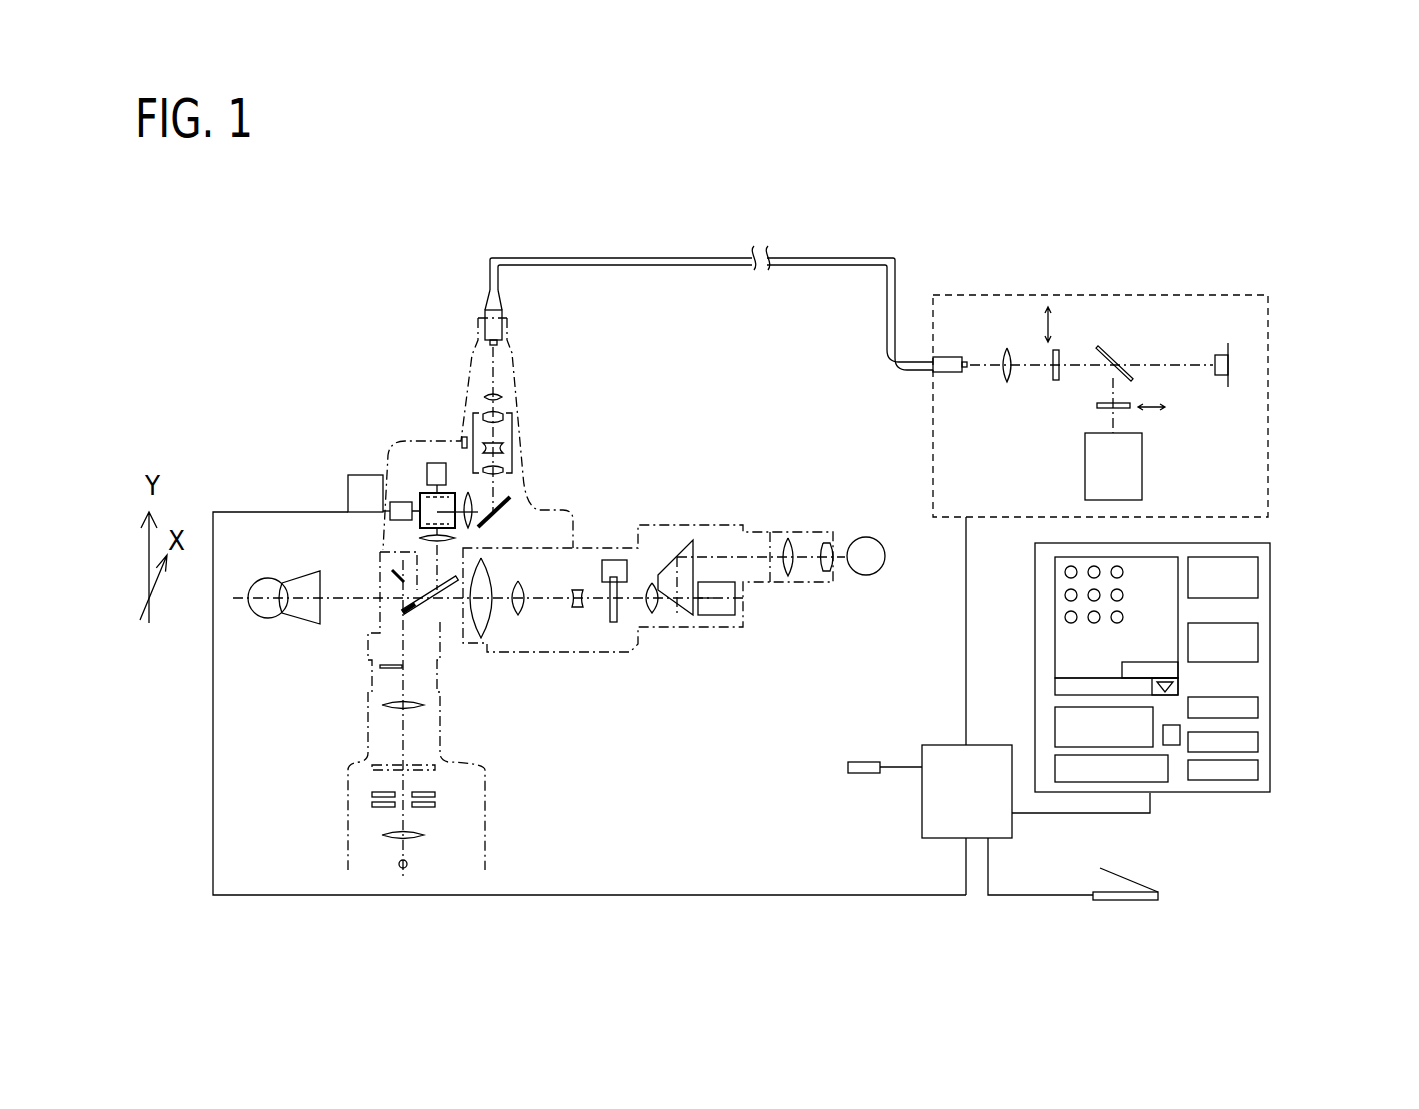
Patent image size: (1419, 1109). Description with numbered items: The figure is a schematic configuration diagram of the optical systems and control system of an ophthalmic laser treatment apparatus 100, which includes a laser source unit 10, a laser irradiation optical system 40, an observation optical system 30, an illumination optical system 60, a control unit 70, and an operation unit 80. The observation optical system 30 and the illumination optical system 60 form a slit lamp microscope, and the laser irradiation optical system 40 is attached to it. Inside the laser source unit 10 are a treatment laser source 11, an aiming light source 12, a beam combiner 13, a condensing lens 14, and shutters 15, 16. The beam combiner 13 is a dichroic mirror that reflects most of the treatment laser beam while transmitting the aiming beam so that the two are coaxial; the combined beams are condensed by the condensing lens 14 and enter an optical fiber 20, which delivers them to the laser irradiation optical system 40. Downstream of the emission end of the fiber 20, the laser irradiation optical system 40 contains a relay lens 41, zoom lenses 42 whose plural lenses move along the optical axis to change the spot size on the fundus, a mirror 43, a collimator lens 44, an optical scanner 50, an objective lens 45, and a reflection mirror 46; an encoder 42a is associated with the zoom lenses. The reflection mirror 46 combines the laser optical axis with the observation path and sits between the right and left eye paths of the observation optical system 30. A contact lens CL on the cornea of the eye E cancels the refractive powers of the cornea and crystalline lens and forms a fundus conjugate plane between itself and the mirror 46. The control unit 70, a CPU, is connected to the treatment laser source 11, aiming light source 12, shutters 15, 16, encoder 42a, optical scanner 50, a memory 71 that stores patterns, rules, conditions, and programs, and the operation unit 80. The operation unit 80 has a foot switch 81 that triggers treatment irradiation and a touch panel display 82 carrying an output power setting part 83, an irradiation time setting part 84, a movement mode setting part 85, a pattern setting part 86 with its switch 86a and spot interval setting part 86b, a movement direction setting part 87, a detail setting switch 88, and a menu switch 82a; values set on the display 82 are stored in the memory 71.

The ophthalmic laser treatment apparatus 100 is at (321, 249).
The laser source unit 10 is at (1110, 293).
The treatment laser source 11 is at (1142, 467).
The aiming light source 12 is at (1216, 375).
The beam combiner 13 is at (1108, 350).
The condensing lens 14 is at (1007, 347).
The shutter 15 is at (1102, 410).
The shutter 16 is at (1050, 380).
The optical fiber 20 is at (730, 265).
The observation optical system 30 is at (683, 635).
The laser irradiation optical system 40 is at (633, 432).
The relay lens 41 is at (503, 397).
The zoom lenses 42 is at (513, 443).
The encoder 42a is at (463, 436).
The mirror 43 is at (480, 528).
The collimator lens 44 is at (475, 493).
The objective lens 45 is at (418, 539).
The reflection mirror 46 is at (437, 612).
The optical scanner 50 is at (410, 483).
The illumination optical system 60 is at (565, 802).
The control unit 70 is at (937, 743).
The memory 71 is at (863, 775).
The operation unit 80 is at (1232, 923).
The foot switch 81 is at (1167, 897).
The display 82 is at (1190, 795).
The menu switch 82a is at (1262, 777).
The output power setting part 83 is at (1260, 577).
The irradiation time setting part 84 is at (1260, 637).
The movement mode setting part 85 is at (1260, 700).
The pattern setting part 86 is at (1055, 660).
The switch 86a is at (1180, 684).
The spot interval setting part 86b is at (1153, 662).
The movement direction setting part 87 is at (1040, 782).
The detail setting switch 88 is at (1260, 742).
The eye E is at (268, 612).
The contact lens CL is at (310, 618).